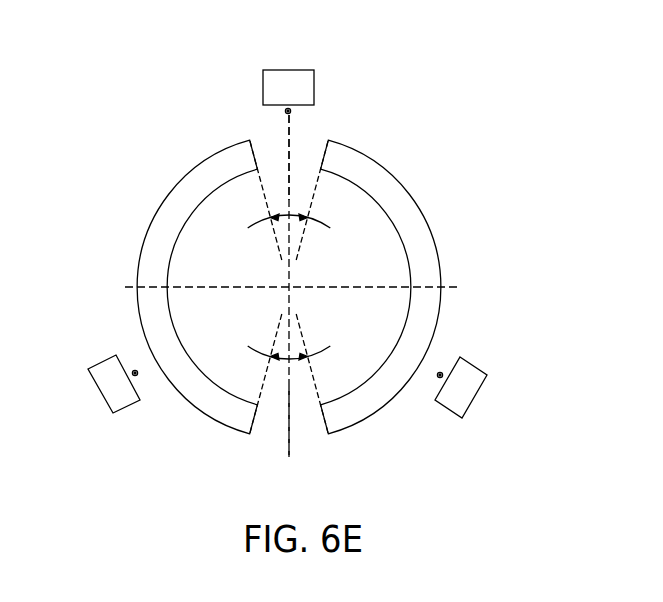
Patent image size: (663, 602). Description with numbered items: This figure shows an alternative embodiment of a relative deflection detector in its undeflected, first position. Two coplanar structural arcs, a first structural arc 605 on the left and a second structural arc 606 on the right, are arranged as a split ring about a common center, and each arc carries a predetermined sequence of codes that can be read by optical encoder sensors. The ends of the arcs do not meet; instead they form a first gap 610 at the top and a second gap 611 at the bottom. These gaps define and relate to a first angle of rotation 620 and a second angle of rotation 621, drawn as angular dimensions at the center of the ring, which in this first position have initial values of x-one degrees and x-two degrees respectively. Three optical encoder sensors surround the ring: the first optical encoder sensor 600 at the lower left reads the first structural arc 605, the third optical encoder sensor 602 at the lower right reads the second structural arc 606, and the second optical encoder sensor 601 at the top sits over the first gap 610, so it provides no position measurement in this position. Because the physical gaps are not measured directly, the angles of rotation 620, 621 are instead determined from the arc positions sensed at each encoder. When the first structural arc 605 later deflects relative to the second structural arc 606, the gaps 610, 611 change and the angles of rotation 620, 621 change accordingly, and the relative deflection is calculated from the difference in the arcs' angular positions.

The first optical encoder sensor 600 is at (100, 392).
The second optical encoder sensor 601 is at (294, 67).
The third optical encoder sensor 602 is at (477, 396).
The first structural arc 605 is at (212, 153).
The second structural arc 606 is at (395, 171).
The first gap 610 is at (297, 150).
The second gap 611 is at (280, 422).
The first angle of rotation 620 is at (383, 238).
The second angle of rotation 621 is at (400, 330).